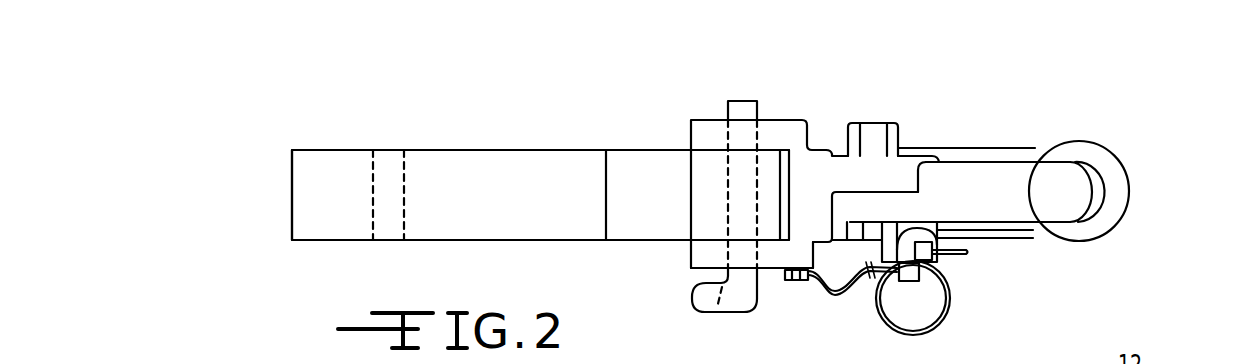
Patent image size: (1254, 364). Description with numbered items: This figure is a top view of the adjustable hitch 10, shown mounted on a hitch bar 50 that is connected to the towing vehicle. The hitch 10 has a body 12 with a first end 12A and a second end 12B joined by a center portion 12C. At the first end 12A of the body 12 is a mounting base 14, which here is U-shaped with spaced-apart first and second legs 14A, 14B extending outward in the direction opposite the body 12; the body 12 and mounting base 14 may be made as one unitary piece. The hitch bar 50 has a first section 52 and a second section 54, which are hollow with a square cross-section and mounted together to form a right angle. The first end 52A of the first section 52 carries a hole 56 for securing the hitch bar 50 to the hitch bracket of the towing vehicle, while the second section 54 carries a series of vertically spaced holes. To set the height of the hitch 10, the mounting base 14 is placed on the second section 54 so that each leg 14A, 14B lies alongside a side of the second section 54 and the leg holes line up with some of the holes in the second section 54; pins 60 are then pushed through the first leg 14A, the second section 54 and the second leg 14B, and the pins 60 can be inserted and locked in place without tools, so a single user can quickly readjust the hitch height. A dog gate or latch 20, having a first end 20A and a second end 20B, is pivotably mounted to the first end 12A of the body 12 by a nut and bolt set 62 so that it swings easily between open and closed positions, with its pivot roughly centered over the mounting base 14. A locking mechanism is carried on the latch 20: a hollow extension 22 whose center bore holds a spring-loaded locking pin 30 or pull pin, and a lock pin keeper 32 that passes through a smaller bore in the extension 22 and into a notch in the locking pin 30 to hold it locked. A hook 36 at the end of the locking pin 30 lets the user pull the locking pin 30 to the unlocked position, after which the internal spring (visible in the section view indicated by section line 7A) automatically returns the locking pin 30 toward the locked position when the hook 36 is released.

The hitch 10 is at (942, 98).
The body 12 is at (980, 147).
The first end 12A is at (828, 148).
The second end 12B is at (1033, 158).
The center portion 12C is at (1033, 240).
The mounting base 14 is at (799, 153).
The first leg 14A is at (767, 262).
The second leg 14B is at (697, 120).
The latch 20 is at (1018, 183).
The first end 20A is at (883, 207).
The second end 20B is at (1070, 183).
The hollow extension 22 is at (938, 225).
The locking pin 30 is at (915, 278).
The lock pin keeper 32 is at (928, 258).
The hook 36 is at (925, 332).
The hitch bar 50 is at (452, 149).
The first section 52 is at (473, 241).
The first end 52A is at (292, 192).
The second section 54 is at (710, 205).
The hole 56 is at (383, 246).
The pins 60 is at (738, 310).
The nut and bolt set 62 is at (868, 126).
The section line 7A is at (874, 357).